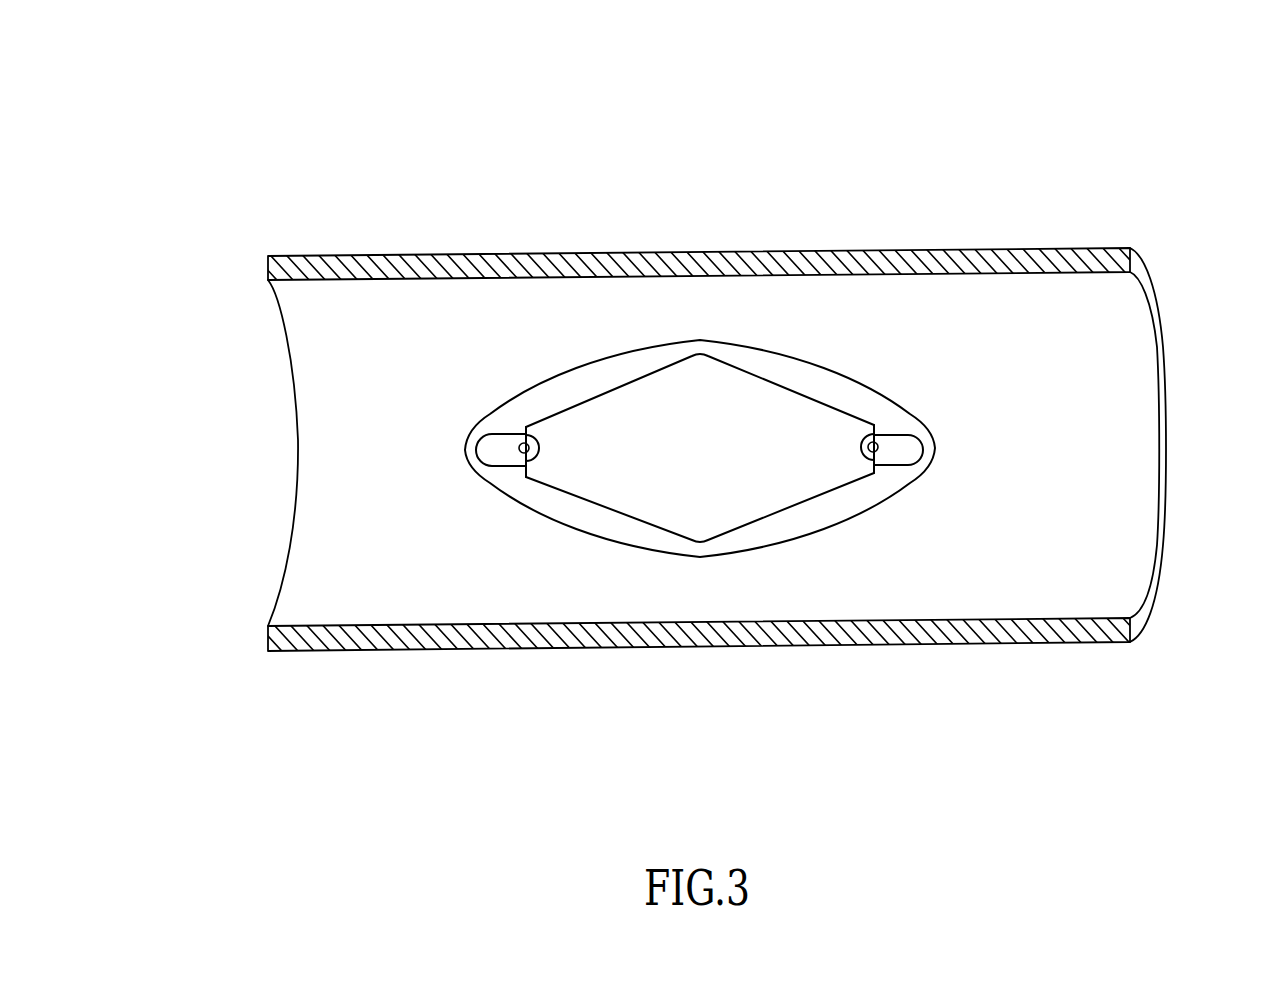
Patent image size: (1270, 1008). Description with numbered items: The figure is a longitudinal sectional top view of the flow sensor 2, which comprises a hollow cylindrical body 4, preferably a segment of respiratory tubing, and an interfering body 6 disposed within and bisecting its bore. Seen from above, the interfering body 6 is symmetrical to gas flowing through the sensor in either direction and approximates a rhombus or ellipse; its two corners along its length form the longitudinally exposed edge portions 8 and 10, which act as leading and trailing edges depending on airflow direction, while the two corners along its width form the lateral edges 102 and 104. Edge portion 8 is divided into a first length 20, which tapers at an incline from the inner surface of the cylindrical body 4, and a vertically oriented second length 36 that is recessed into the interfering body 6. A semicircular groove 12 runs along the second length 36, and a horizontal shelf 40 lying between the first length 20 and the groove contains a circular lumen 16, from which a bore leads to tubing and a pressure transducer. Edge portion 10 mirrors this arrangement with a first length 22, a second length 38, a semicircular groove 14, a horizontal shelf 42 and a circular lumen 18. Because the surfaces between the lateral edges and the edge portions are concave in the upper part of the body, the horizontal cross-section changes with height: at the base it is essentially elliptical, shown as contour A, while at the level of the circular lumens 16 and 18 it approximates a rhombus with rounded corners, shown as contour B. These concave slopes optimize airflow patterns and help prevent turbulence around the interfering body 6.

The flow sensor 2 is at (515, 155).
The cylindrical body 4 is at (703, 263).
The interfering body 6 is at (703, 382).
The edge portion 8 is at (1005, 441).
The edge portion 10 is at (420, 461).
The semicircular groove 12 is at (858, 450).
The semicircular groove 14 is at (528, 478).
The circular lumen 16 is at (880, 443).
The circular lumen 18 is at (520, 447).
The first length 20 is at (937, 438).
The first length 22 is at (495, 444).
The second length 36 is at (873, 427).
The second length 38 is at (505, 470).
The horizontal shelf 40 is at (927, 432).
The horizontal shelf 42 is at (478, 447).
The lateral edge 102 is at (699, 580).
The lateral edge 104 is at (680, 322).
The contour A is at (893, 492).
The contour B is at (838, 487).